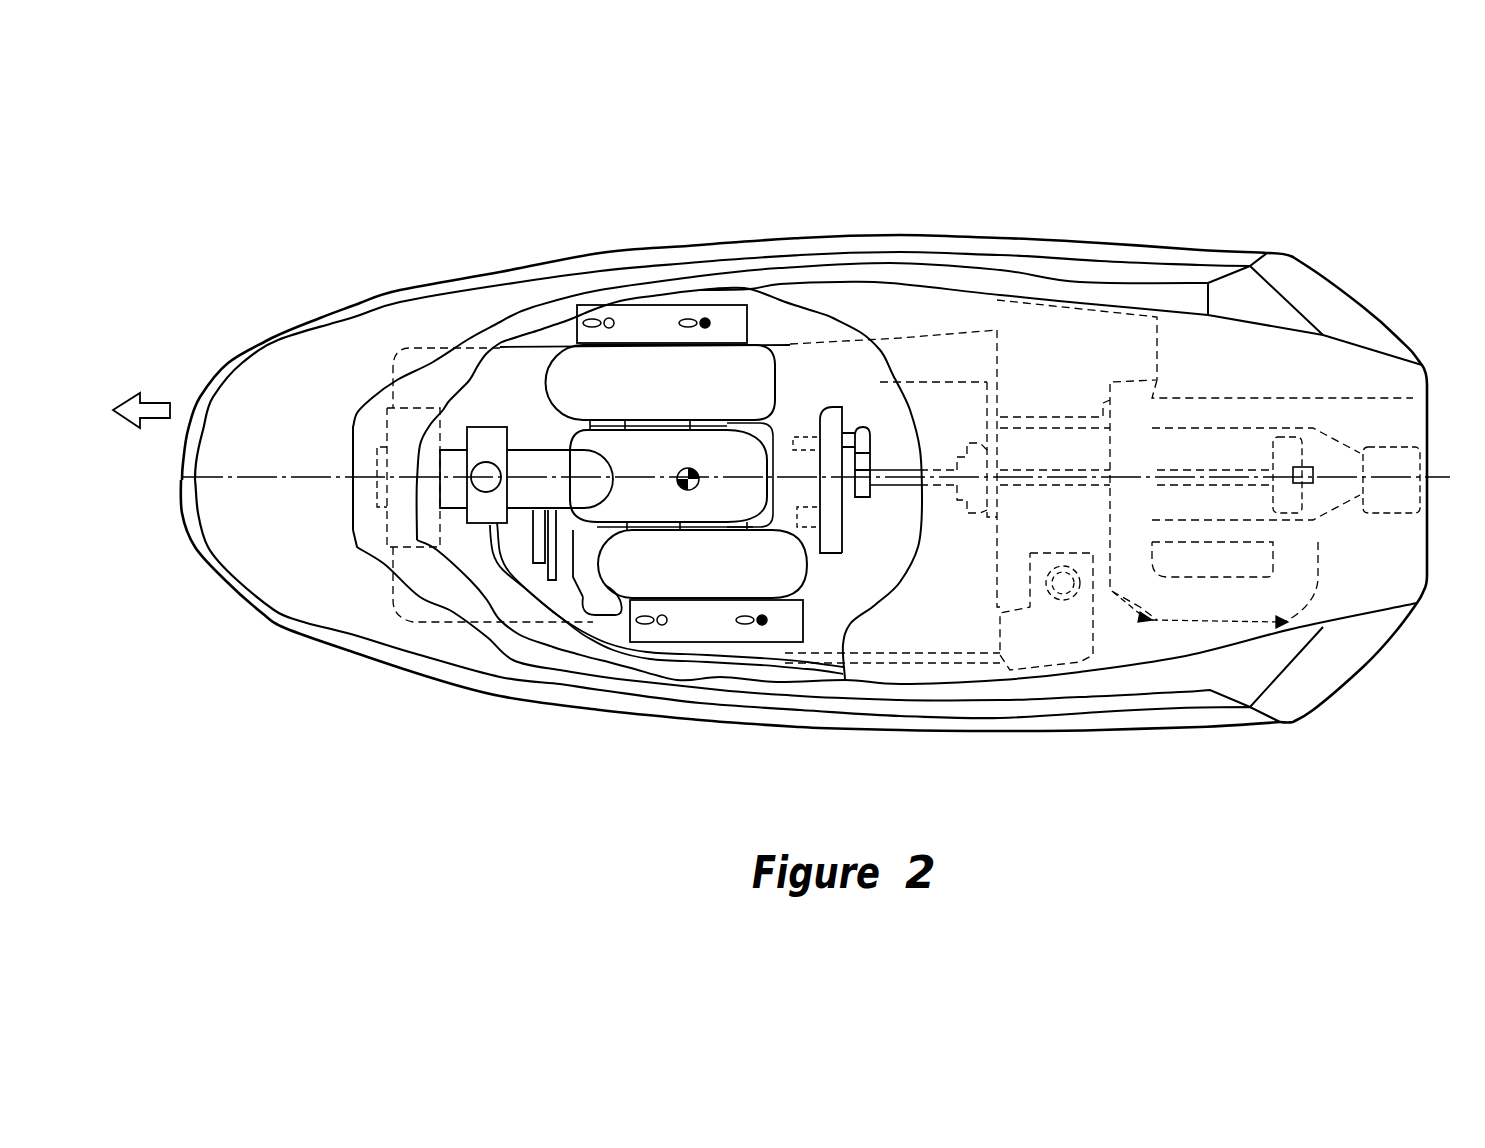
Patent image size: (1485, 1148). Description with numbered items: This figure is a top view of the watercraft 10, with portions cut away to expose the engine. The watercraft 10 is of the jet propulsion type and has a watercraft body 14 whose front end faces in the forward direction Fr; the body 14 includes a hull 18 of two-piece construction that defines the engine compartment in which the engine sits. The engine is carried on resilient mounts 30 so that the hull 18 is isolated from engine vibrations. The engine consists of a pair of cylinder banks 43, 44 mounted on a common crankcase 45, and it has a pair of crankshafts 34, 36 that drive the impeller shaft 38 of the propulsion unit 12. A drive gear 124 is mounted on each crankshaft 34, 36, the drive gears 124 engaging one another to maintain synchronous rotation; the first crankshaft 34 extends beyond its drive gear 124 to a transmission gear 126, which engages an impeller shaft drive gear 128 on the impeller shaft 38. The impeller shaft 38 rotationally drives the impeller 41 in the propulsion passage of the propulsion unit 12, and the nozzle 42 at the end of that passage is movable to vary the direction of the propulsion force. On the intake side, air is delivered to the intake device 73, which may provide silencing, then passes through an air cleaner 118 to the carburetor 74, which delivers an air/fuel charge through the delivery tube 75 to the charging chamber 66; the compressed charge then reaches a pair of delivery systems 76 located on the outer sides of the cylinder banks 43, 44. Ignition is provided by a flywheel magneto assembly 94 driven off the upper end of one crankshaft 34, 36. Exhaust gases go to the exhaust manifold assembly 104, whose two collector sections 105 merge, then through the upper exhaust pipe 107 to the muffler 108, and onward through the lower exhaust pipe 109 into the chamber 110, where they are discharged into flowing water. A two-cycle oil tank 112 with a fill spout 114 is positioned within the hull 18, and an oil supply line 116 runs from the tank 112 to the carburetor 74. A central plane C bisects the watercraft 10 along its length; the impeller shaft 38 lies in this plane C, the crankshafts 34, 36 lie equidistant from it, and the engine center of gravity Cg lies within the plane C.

The watercraft 10 is at (940, 203).
The propulsion unit 12 is at (1328, 413).
The watercraft body 14 is at (423, 254).
The hull 18 is at (400, 293).
The resilient mounts 30 is at (627, 466).
The crankshaft 34 is at (797, 520).
The crankshaft 36 is at (803, 430).
The impeller shaft 38 is at (880, 470).
The impeller 41 is at (1303, 433).
The nozzle 42 is at (1440, 452).
The cylinder bank 43 is at (730, 626).
The cylinder bank 44 is at (634, 332).
The crankcase 45 is at (573, 567).
The charging chamber 66 is at (657, 440).
The intake device 73 is at (377, 457).
The carburetor 74 is at (547, 408).
The delivery tube 75 is at (483, 427).
The delivery system 76 is at (820, 623).
The flywheel magneto assembly 94 is at (537, 545).
The exhaust manifold assembly 104 is at (779, 334).
The collector section 105 is at (588, 372).
The upper exhaust pipe 107 is at (930, 330).
The muffler 108 is at (1078, 320).
The lower exhaust pipe 109 is at (1293, 632).
The chamber 110 is at (1357, 533).
The oil tank 112 is at (1063, 647).
The fill spout 114 is at (1120, 615).
The oil supply line 116 is at (805, 611).
The air cleaner 118 is at (387, 407).
The drive gear 124 is at (833, 407).
The transmission gear 126 is at (842, 547).
The impeller shaft drive gear 128 is at (890, 347).
The central plane C is at (243, 480).
The center of gravity Cg is at (686, 492).
The forward direction Fr is at (145, 403).